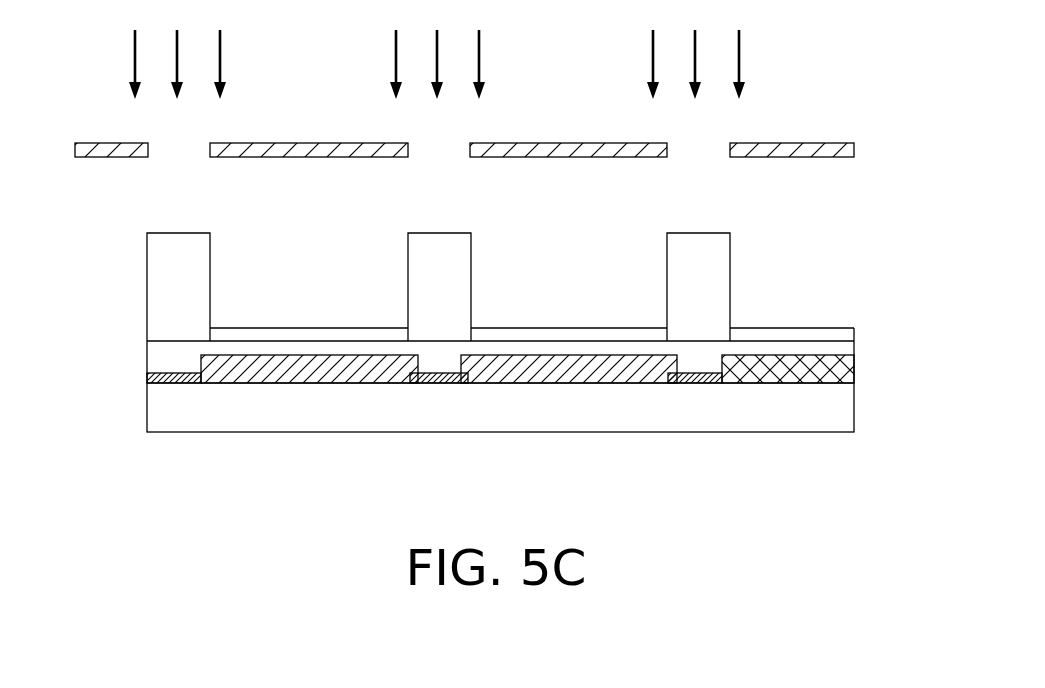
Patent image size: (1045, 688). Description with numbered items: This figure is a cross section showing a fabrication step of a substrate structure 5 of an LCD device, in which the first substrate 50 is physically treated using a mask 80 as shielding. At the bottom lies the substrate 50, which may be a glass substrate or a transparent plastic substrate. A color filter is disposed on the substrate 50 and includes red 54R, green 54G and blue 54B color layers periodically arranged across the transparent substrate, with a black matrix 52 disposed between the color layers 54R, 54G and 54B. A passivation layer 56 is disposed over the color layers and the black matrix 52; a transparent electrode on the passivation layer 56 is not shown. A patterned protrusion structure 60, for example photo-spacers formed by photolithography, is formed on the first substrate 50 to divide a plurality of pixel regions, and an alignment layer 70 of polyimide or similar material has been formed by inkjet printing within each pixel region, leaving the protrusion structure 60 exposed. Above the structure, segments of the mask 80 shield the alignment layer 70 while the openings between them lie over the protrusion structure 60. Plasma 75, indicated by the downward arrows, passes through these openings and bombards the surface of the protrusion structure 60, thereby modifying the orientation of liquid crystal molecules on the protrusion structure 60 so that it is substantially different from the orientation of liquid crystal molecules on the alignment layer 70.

The substrate structure 5 is at (113, 301).
The substrate 50 is at (853, 412).
The black matrix 52 is at (176, 384).
The red color layer 54R is at (307, 368).
The green color layer 54G is at (564, 368).
The blue color layer 54B is at (799, 368).
The passivation layer 56 is at (853, 347).
The patterned protrusion structure 60 is at (180, 246).
The alignment layer 70 is at (306, 339).
The plasma 75 is at (222, 53).
The mask 80 is at (95, 143).